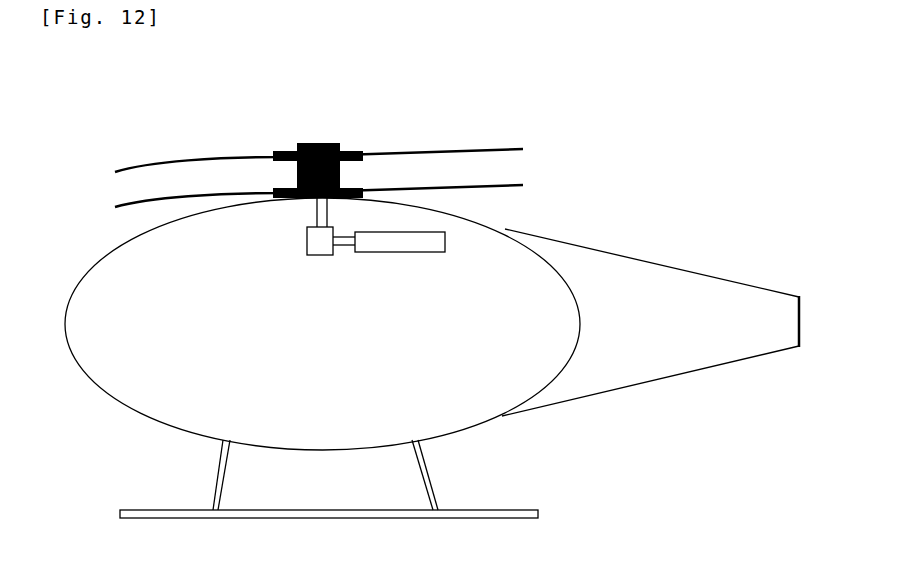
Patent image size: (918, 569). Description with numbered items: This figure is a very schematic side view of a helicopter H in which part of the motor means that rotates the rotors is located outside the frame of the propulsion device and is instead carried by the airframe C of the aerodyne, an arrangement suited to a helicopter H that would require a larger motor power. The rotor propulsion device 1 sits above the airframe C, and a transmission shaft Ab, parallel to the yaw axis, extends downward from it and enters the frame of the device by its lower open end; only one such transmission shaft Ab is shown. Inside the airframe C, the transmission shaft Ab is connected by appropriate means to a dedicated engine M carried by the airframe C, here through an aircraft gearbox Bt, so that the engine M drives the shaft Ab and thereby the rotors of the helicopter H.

The helicopter H is at (643, 176).
The airframe C is at (113, 400).
The rotor 1 is at (299, 151).
The transmission shaft Ab is at (313, 212).
The aircraft gearbox Bt is at (322, 255).
The dedicated engine M is at (367, 252).